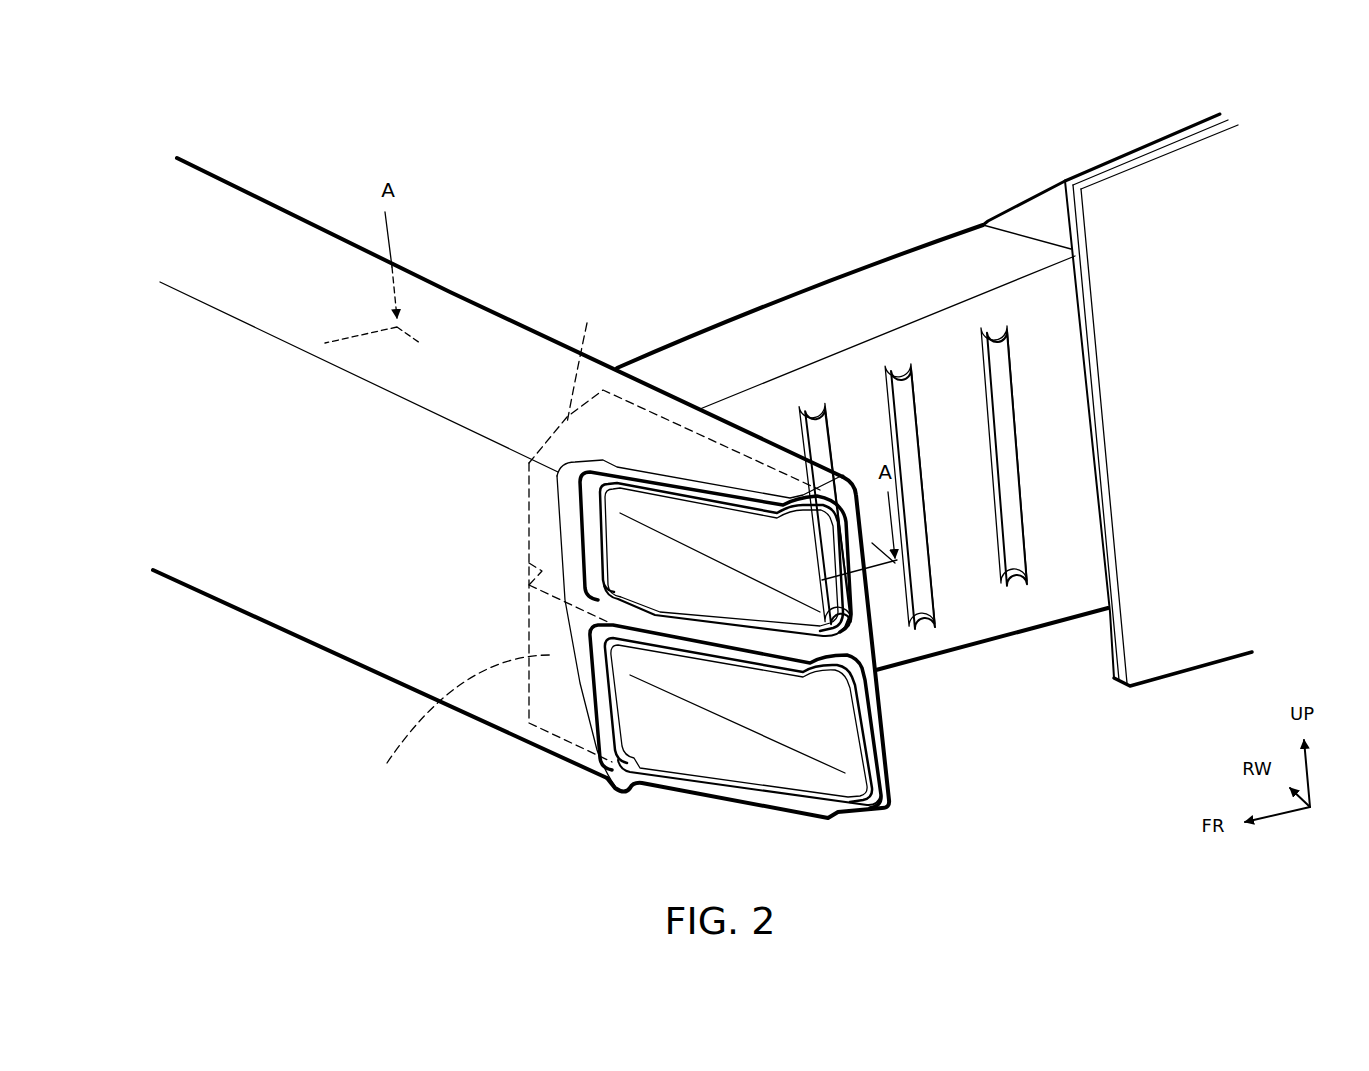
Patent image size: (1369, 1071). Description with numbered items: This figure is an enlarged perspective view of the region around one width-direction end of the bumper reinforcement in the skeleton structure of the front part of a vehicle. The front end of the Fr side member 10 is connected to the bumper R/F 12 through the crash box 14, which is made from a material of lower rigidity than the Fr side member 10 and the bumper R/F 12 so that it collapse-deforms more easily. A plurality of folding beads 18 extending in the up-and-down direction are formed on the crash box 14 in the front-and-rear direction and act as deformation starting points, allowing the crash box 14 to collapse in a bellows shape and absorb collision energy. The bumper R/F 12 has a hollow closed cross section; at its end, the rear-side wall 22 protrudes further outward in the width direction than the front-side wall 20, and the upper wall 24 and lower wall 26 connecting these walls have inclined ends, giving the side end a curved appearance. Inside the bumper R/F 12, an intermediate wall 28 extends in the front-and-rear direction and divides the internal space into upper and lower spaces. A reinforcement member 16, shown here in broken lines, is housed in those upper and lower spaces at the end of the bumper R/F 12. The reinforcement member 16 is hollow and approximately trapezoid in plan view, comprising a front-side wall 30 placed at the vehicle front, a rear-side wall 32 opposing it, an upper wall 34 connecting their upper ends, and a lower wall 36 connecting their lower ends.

The Fr side member 10 is at (1158, 202).
The bumper R/F 12 is at (243, 190).
The crash box 14 is at (953, 262).
The reinforcement member 16 is at (596, 544).
The folding bead 18 is at (808, 423).
The front-side wall 20 is at (582, 682).
The rear-side wall 22 is at (886, 757).
The upper wall 24 is at (692, 485).
The lower wall 26 is at (697, 788).
The intermediate wall 28 is at (682, 632).
The front-side wall 30 is at (597, 547).
The rear-side wall 32 is at (847, 555).
The upper wall 34 is at (703, 493).
The lower wall 36 is at (723, 627).